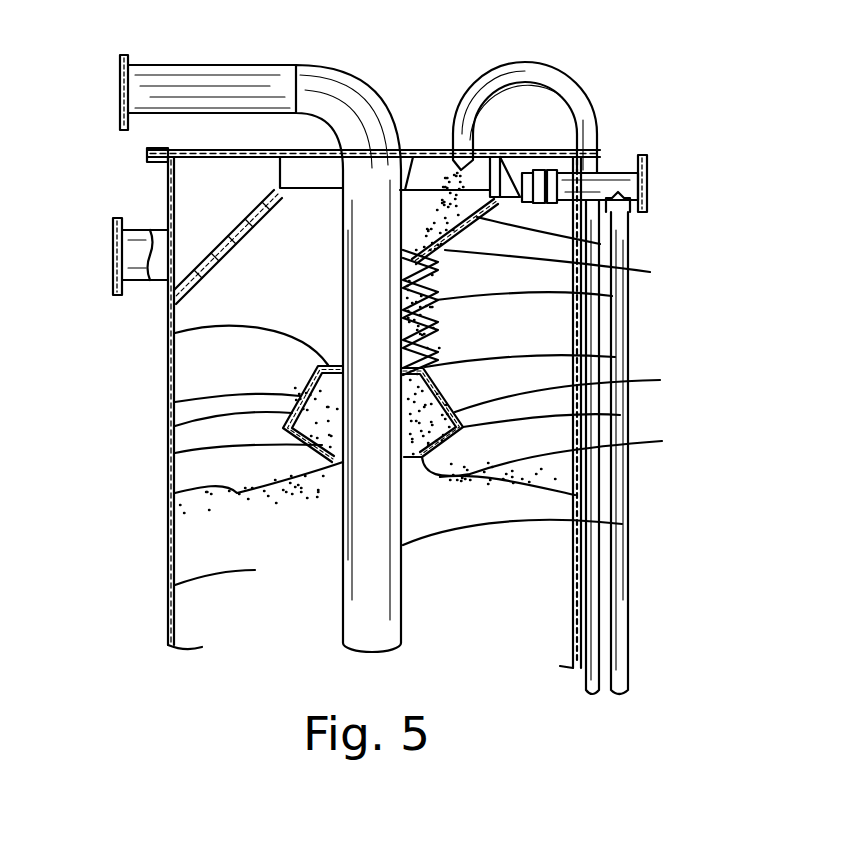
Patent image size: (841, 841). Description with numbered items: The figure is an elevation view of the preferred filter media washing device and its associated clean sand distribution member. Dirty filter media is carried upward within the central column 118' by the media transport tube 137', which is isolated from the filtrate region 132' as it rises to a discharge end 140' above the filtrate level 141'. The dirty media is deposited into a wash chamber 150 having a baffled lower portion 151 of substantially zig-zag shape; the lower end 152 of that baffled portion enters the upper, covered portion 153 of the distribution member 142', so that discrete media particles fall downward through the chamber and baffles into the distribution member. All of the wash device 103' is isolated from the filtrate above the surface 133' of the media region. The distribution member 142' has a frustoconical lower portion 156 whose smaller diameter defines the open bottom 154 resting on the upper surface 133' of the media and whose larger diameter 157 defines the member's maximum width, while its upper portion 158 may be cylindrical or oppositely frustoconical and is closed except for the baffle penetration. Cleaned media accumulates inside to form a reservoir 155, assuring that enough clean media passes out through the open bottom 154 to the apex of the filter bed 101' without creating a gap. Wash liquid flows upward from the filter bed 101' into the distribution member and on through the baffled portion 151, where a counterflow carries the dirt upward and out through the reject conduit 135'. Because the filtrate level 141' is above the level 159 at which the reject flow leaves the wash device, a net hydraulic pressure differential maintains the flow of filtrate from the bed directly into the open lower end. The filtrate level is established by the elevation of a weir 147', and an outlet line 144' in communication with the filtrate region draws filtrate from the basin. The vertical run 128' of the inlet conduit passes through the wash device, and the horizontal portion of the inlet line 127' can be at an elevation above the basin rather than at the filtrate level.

The inlet line 127' is at (260, 85).
The reject flow level 159 is at (400, 140).
The discharge end 140' is at (508, 110).
The media transport tube 137' is at (628, 126).
The reject conduit 135' is at (627, 178).
The filtrate level 141' is at (261, 151).
The weir 147' is at (165, 240).
The outlet line 144' is at (108, 273).
The upper covered portion 153 is at (175, 333).
The filtrate region 132' is at (143, 372).
The upper portion of distribution member 158 is at (175, 402).
The reservoir of clean media 155 is at (175, 426).
The frustoconical lower portion 156 is at (175, 453).
The upper surface of media 133' is at (204, 490).
The filter bed 101' is at (181, 586).
The wash chamber 150 is at (600, 244).
The wash device 103' is at (592, 268).
The baffled lower portion 151 is at (612, 296).
The central column 118' is at (649, 412).
The lower end of baffled portion 152 is at (615, 357).
The distribution member 142' is at (599, 388).
The larger diameter 157 is at (620, 415).
The open bottom 154 is at (662, 441).
The vertical run of inlet conduit 128' is at (551, 447).